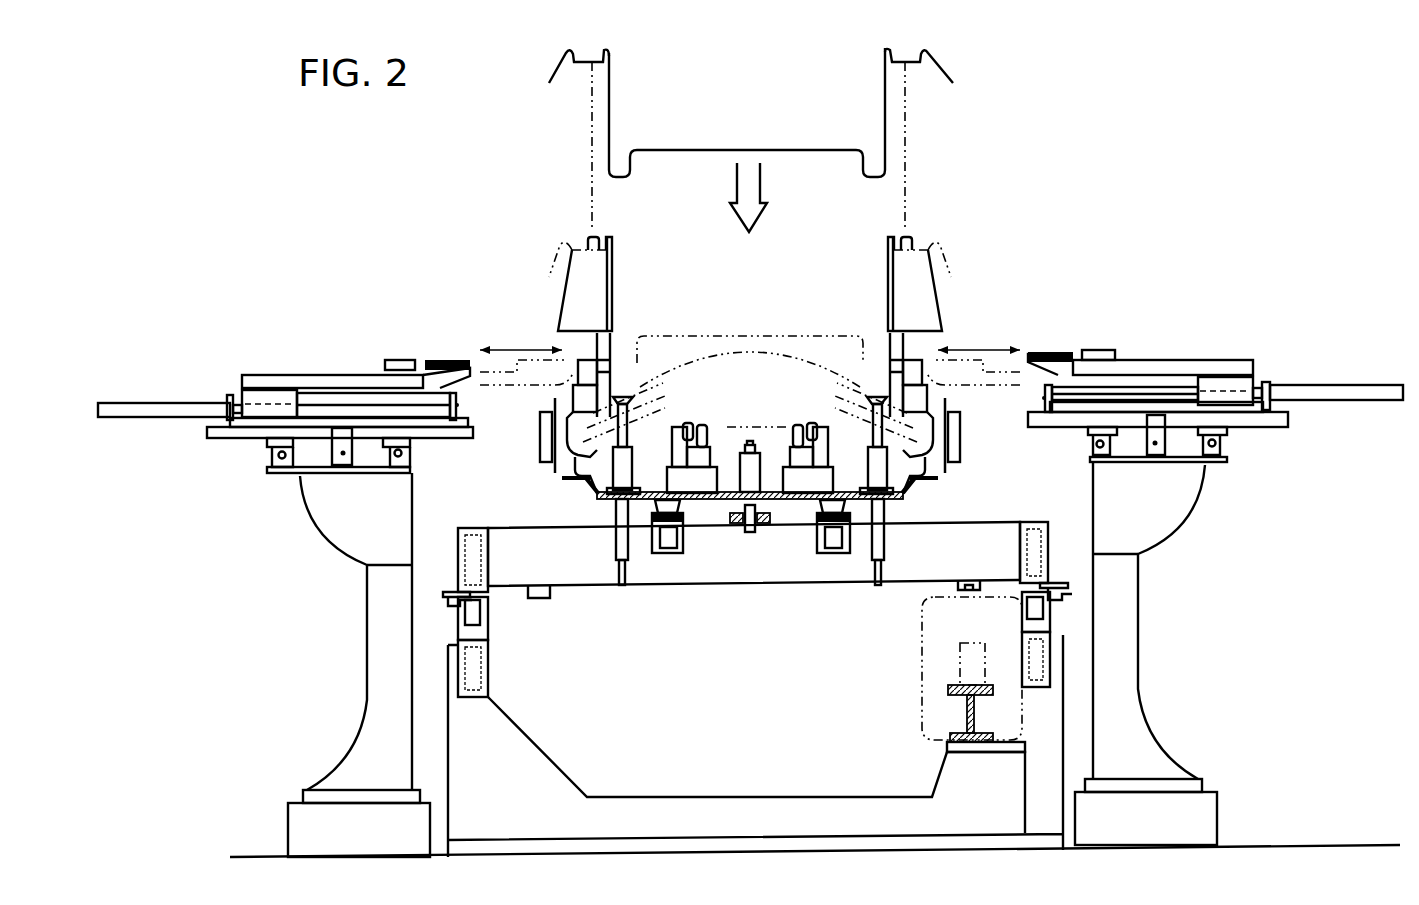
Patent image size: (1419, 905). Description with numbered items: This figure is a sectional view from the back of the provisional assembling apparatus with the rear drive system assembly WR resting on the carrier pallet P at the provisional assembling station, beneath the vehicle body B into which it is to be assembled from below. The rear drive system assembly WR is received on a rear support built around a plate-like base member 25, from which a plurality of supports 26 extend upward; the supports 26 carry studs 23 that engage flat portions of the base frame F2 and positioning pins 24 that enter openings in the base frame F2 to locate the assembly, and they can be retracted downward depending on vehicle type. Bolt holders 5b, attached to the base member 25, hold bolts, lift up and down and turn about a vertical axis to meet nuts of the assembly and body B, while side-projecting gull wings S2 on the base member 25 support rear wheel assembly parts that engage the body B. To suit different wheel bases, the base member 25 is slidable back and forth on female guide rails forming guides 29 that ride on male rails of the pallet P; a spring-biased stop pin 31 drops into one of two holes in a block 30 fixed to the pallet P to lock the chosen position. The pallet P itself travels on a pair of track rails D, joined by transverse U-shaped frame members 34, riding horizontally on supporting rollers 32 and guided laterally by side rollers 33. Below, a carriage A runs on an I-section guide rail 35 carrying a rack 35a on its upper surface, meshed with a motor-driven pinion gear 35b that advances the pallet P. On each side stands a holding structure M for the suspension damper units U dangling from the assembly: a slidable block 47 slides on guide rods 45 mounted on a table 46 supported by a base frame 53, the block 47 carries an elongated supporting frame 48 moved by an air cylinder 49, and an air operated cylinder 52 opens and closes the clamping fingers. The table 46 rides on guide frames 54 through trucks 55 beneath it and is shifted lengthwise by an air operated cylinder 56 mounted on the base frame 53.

The vehicle body B is at (955, 78).
The suspension damper unit U is at (565, 322).
The rear drive system assembly WR is at (808, 335).
The base frame F2 is at (751, 352).
The bolt holder 5b is at (627, 410).
The stud 23 is at (700, 425).
The positioning pin 24 is at (686, 425).
The plate-like base member 25 is at (790, 501).
The support 26 is at (708, 446).
The guide 29 is at (630, 520).
The block 30 is at (735, 524).
The stop pin 31 is at (747, 530).
The supporting roller 32 is at (490, 620).
The side roller 33 is at (450, 590).
The U-shaped frame member 34 is at (748, 797).
The guide rail 35 is at (968, 715).
The rack 35a is at (965, 683).
The pinion gear 35b is at (960, 655).
The guide rod 45 is at (325, 400).
The table 46 is at (223, 440).
The slidable block 47 is at (253, 392).
The supporting frame 48 is at (353, 375).
The air cylinder 49 is at (123, 403).
The air operated cylinder 52 is at (402, 360).
The base frame 53 is at (358, 530).
The guide frame 54 is at (282, 468).
The truck 55 is at (270, 448).
The air operated cylinder 56 is at (333, 466).
The gull wing S2 is at (585, 496).
The carrier pallet P is at (993, 525).
The track rail D is at (455, 611).
The carriage A is at (922, 682).
The holding structure M is at (259, 364).